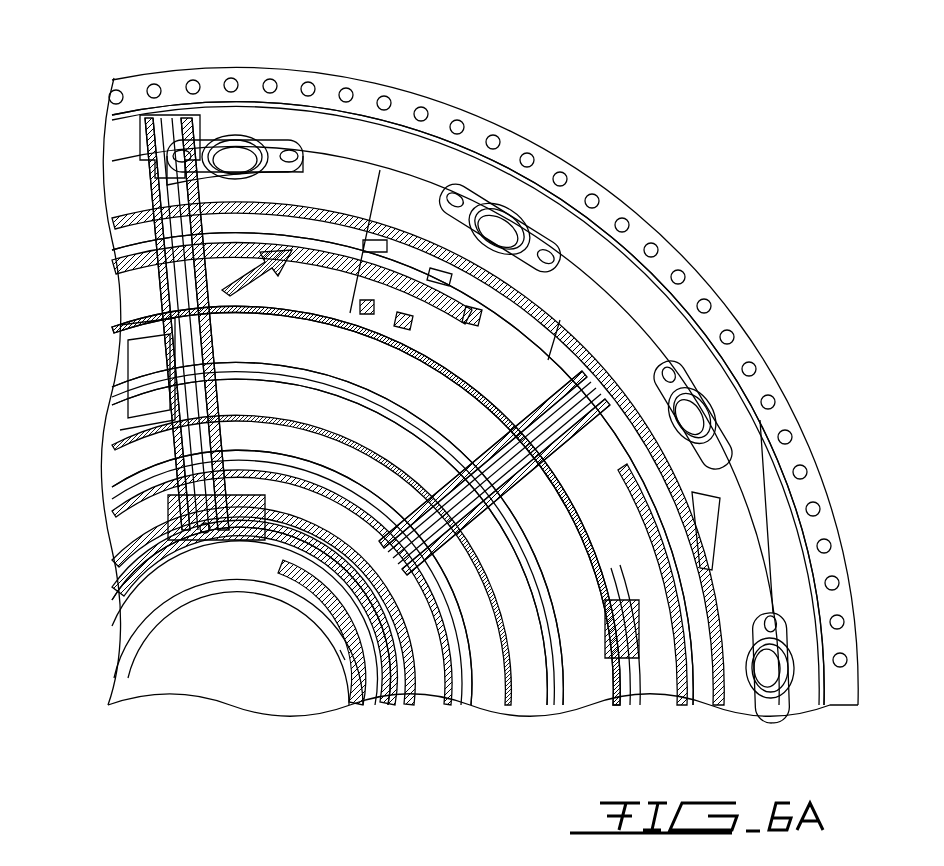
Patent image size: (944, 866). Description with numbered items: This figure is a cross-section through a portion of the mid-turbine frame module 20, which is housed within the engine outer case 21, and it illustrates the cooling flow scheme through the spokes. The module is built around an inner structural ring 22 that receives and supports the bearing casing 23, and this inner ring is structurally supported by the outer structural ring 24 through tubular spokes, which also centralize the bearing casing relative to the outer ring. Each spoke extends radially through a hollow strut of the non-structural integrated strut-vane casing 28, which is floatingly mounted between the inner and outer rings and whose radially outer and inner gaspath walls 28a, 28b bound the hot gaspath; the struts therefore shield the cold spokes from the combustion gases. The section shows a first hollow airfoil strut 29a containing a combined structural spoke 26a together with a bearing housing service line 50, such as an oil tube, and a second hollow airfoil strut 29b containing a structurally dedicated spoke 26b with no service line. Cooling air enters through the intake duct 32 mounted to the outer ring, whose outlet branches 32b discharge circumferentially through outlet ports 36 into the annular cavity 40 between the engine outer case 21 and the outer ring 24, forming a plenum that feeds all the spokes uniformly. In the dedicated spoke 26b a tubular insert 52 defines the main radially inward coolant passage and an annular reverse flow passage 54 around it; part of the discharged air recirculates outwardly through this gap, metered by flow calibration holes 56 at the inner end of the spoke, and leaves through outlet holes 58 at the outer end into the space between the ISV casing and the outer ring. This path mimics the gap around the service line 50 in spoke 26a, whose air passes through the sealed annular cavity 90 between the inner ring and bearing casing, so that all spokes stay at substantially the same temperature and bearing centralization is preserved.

The mid-turbine frame module 20 is at (772, 188).
The engine outer case 21 is at (560, 315).
The inner structural ring 22 is at (398, 640).
The bearing casing 23 is at (210, 520).
The outer structural ring 24 is at (530, 210).
The combined structural spoke 26a is at (200, 285).
The structurally dedicated spoke 26b is at (590, 470).
The integrated strut-vane casing 28 is at (342, 328).
The radially outer gaspath wall 28a is at (417, 357).
The radially inner gaspath wall 28b is at (514, 678).
The first hollow airfoil strut 29a is at (220, 340).
The second hollow airfoil strut 29b is at (600, 505).
The intake duct 32 is at (338, 240).
The outlet branch 32b is at (197, 300).
The outlet port 36 is at (300, 247).
The annular cavity 40 is at (667, 517).
The bearing housing service line 50 is at (150, 175).
The tubular insert 52 is at (600, 560).
The annular reverse flow passage 54 is at (488, 640).
The flow calibration device 56 is at (347, 661).
The outlet hole 58 is at (560, 385).
The annular cavity 90 is at (427, 690).